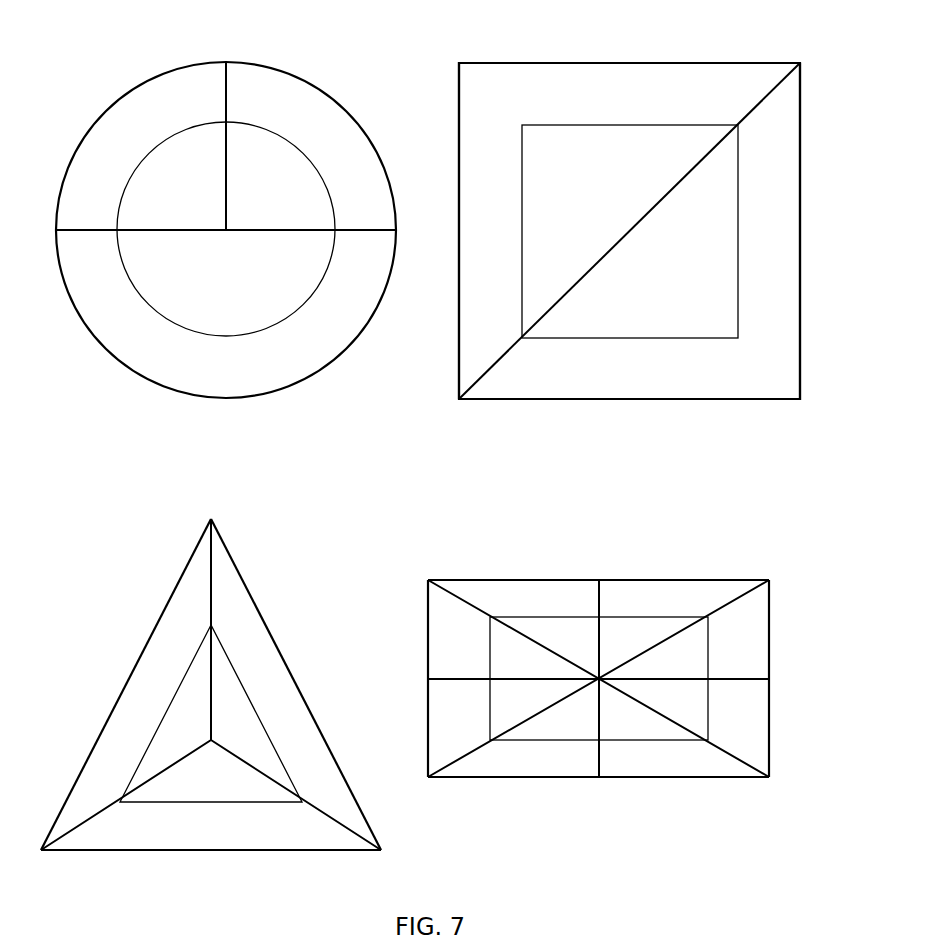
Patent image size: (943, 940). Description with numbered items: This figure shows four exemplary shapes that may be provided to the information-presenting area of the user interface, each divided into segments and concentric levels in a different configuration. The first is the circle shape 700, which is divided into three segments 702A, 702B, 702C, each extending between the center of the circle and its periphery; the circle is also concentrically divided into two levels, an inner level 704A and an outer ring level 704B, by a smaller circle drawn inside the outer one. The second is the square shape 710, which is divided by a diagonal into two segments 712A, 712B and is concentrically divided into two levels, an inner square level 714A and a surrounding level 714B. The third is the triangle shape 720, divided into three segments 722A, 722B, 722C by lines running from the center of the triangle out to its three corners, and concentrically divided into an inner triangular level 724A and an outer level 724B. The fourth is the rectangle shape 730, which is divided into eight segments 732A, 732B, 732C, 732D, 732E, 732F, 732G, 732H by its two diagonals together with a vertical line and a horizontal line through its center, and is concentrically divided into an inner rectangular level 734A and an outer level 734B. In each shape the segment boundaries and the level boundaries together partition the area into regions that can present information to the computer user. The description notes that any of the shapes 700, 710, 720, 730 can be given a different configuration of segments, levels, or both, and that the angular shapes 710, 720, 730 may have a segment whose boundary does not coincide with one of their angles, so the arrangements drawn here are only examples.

The circle shape 700 is at (222, 45).
The first segment of circle 702A is at (100, 115).
The second segment of circle 702B is at (182, 394).
The third segment of circle 702C is at (346, 108).
The first level of circle 704A is at (226, 229).
The second level of circle 704B is at (226, 180).
The square shape 710 is at (632, 46).
The first segment of square 712A is at (471, 63).
The second segment of square 712B is at (766, 402).
The first level of square 714A is at (630, 231).
The second level of square 714B is at (629, 231).
The triangle shape 720 is at (209, 502).
The first segment of triangle 722A is at (130, 675).
The second segment of triangle 722B is at (216, 853).
The third segment of triangle 722C is at (293, 675).
The first level of triangle 724A is at (211, 713).
The second level of triangle 724B is at (211, 684).
The rectangle shape 730 is at (596, 563).
The first segment of rectangle 732A is at (518, 579).
The second segment of rectangle 732B is at (425, 624).
The third segment of rectangle 732C is at (425, 731).
The fourth segment of rectangle 732D is at (552, 779).
The fifth segment of rectangle 732E is at (664, 779).
The sixth segment of rectangle 732F is at (772, 733).
The seventh segment of rectangle 732G is at (772, 627).
The eighth segment of rectangle 732H is at (680, 579).
The first level of rectangle 734A is at (599, 678).
The second level of rectangle 734B is at (598, 678).